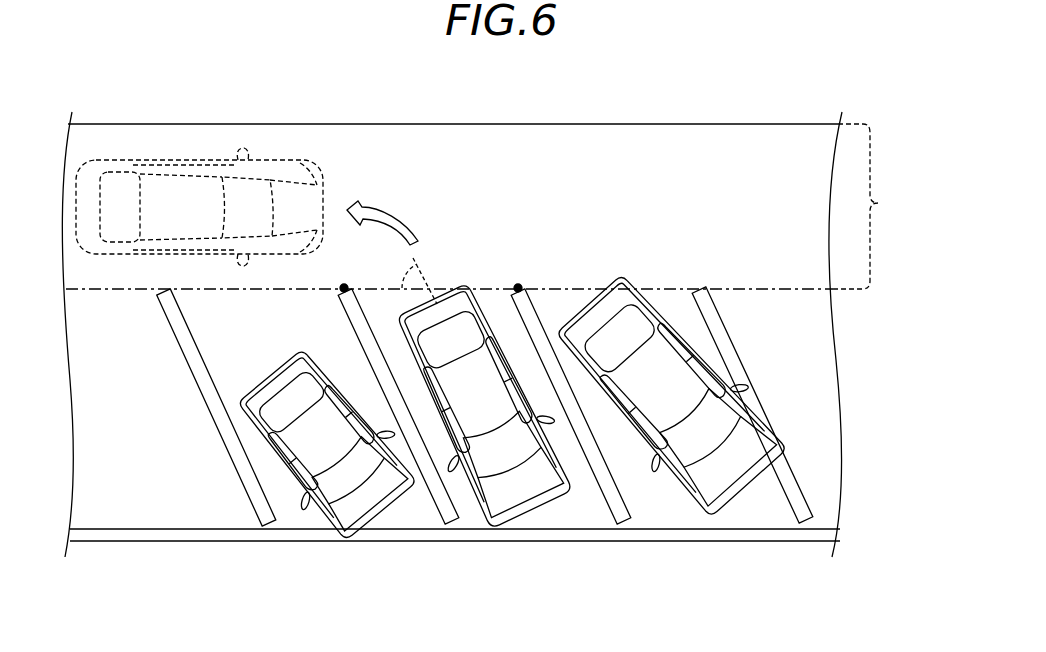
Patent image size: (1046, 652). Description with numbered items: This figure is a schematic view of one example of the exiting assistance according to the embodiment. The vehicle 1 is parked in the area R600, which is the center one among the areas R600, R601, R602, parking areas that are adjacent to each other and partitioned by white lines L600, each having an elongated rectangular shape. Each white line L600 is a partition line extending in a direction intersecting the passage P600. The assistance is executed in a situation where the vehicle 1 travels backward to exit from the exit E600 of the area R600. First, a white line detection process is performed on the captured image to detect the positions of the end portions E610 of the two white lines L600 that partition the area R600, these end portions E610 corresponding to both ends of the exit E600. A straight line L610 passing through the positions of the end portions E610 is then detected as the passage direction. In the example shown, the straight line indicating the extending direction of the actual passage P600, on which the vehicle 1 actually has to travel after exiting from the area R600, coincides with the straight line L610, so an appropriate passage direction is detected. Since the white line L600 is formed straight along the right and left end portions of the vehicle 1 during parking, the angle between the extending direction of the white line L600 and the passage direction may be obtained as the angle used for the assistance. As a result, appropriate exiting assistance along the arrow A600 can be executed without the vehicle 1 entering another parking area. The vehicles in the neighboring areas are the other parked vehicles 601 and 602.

The vehicle 1 is at (320, 182).
The other vehicle (parked) 601 is at (312, 508).
The other vehicle (parked) 602 is at (688, 508).
The white line L600 is at (241, 478).
The straight line L610 is at (595, 287).
The exit E600 is at (497, 303).
The end portion E610 is at (345, 285).
The passage P600 is at (502, 206).
The area R600 is at (574, 512).
The area R601 is at (398, 518).
The area R602 is at (762, 512).
The arrow A600 is at (394, 212).